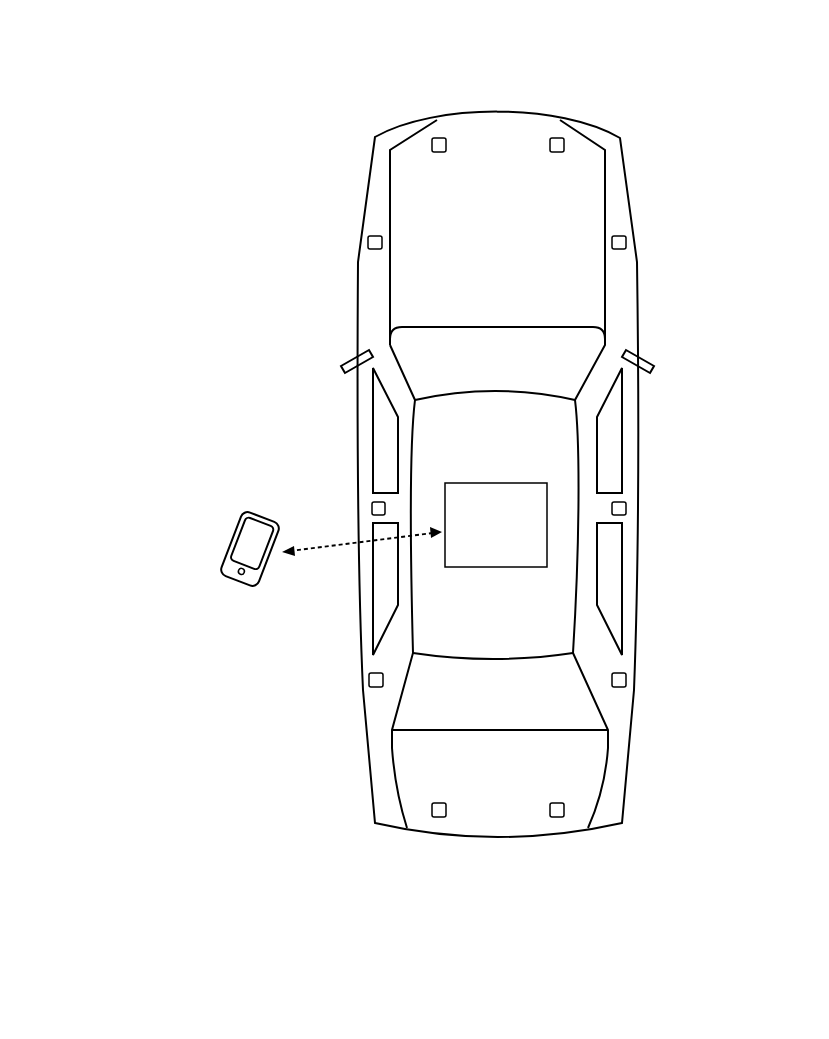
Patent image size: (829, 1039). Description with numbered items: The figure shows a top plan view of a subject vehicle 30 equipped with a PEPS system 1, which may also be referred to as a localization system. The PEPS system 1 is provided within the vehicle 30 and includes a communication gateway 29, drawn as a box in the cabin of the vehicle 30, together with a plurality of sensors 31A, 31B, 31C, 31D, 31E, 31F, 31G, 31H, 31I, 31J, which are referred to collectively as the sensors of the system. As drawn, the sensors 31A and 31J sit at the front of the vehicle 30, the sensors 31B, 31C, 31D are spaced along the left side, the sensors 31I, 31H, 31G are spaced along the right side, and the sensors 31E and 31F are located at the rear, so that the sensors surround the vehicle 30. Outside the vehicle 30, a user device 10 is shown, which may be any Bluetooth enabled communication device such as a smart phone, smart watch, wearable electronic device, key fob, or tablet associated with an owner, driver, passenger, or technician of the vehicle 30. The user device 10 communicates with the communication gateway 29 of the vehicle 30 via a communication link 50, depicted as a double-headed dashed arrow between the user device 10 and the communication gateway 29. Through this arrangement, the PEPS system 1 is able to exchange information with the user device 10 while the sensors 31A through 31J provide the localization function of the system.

The PEPS system 1 is at (170, 69).
The user device 10 is at (228, 545).
The communication gateway 29 is at (472, 483).
The vehicle 30 is at (625, 170).
The sensor 31A is at (438, 138).
The sensor 31B is at (368, 242).
The sensor 31C is at (372, 508).
The sensor 31D is at (369, 680).
The sensor 31E is at (438, 818).
The sensor 31F is at (558, 818).
The sensor 31G is at (626, 680).
The sensor 31H is at (626, 508).
The sensor 31I is at (626, 243).
The sensor 31J is at (558, 138).
The communication link 50 is at (335, 546).